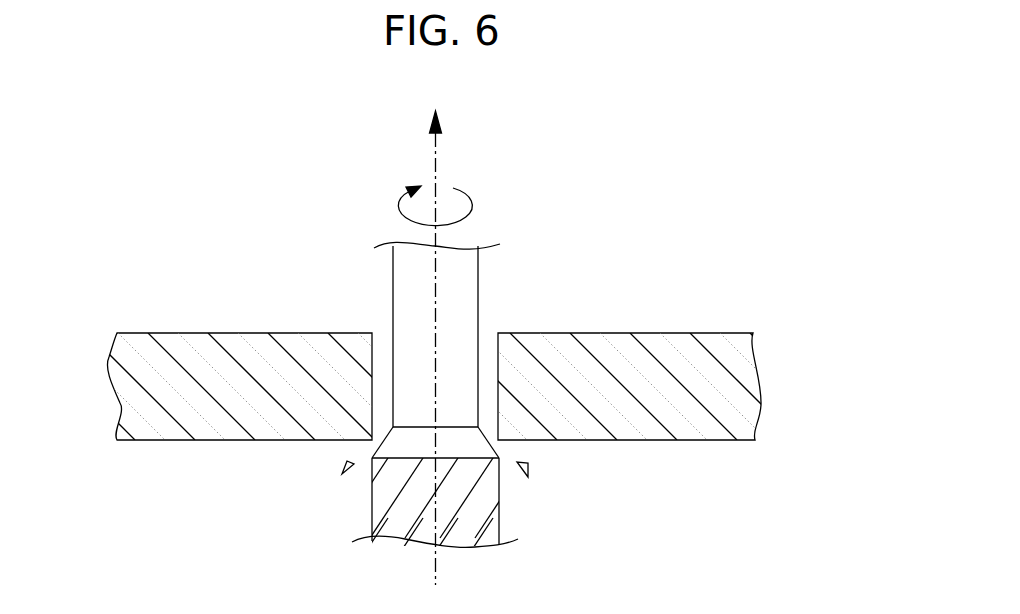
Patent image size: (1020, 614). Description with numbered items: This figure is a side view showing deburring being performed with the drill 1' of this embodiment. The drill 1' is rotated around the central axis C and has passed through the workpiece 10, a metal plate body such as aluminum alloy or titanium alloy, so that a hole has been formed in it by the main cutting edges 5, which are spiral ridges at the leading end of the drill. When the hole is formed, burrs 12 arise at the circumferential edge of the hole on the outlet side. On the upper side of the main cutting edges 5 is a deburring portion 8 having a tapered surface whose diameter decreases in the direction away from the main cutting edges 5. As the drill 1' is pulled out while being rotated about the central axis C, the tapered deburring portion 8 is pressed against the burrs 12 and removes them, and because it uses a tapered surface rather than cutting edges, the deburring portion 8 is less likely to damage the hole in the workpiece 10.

The drill 1' is at (406, 320).
The central axis C is at (438, 174).
The deburring portion 8 is at (486, 432).
The workpiece 10 is at (677, 333).
The burrs 12 is at (343, 466).
The main cutting edges 5 is at (487, 521).